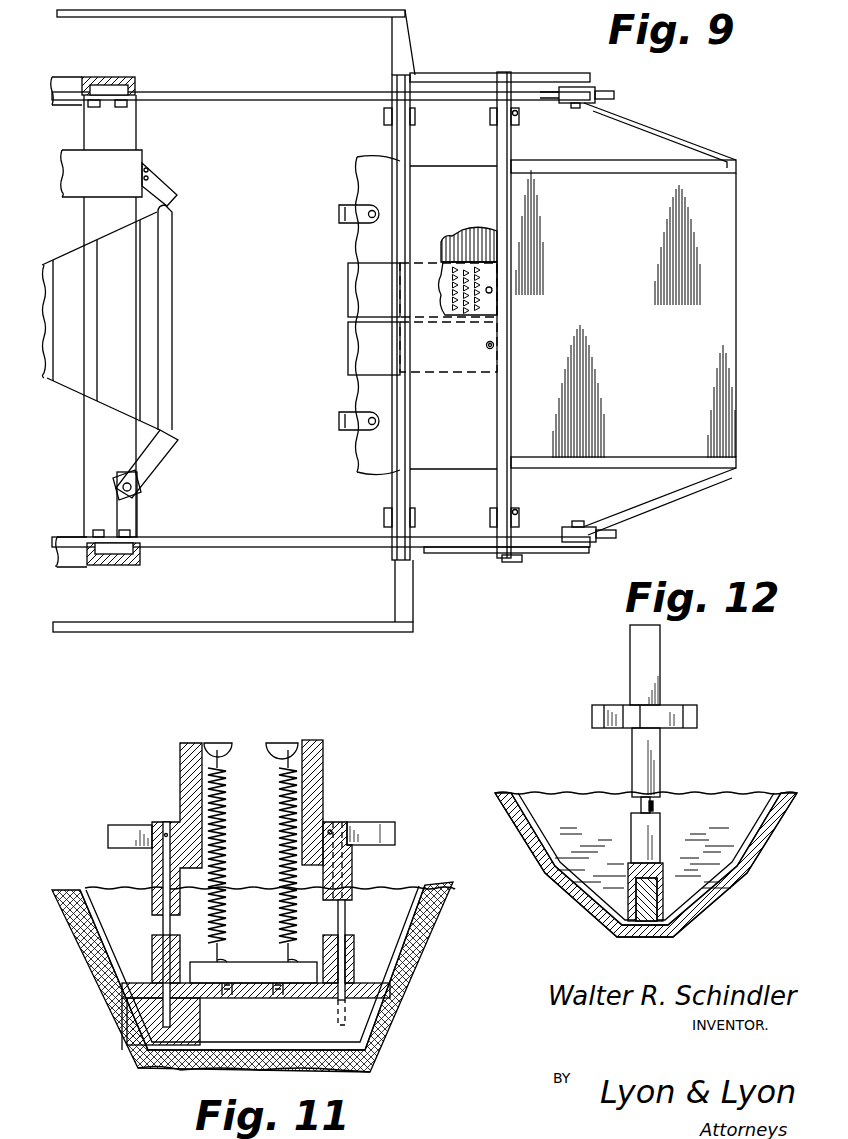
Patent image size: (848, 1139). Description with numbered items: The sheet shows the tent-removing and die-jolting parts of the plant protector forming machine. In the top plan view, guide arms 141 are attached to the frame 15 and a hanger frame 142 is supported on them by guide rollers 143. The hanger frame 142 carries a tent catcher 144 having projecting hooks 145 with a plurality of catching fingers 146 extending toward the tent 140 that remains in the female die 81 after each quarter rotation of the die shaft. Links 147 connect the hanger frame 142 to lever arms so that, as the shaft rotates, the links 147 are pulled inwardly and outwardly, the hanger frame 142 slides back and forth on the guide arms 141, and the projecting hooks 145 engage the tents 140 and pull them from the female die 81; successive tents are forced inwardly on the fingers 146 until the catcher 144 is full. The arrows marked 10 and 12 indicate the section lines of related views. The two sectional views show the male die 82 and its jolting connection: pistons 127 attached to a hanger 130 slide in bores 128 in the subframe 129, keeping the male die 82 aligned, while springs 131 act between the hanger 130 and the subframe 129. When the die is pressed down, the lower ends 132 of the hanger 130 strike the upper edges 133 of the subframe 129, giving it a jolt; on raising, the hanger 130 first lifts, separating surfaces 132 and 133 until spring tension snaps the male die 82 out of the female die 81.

In FIG. 9, the pressure rollers 10 is at (205, 321).
In FIG. 11, the sprocket 12 is at (143, 883).
In FIG. 9, the frame 15 is at (128, 57).
In FIG. 9, the female die 81 is at (130, 383).
In FIG. 11, the female die 81 is at (403, 983).
In FIG. 12, the female die 81 is at (726, 881).
In FIG. 11, the male die 82 is at (430, 904).
In FIG. 12, the male die 82 is at (757, 797).
In FIG. 11, the pistons 127 is at (161, 933).
In FIG. 12, the pistons 127 is at (639, 806).
In FIG. 11, the bores 128 is at (350, 962).
In FIG. 11, the subframe 129 is at (298, 992).
In FIG. 12, the subframe 129 is at (664, 871).
In FIG. 11, the hanger 130 is at (312, 799).
In FIG. 12, the hanger 130 is at (648, 677).
In FIG. 11, the springs 131 is at (276, 802).
In FIG. 11, the lower ends of the hanger 132 is at (356, 900).
In FIG. 12, the lower ends of the hanger 132 is at (646, 793).
In FIG. 11, the upper edges of the subframe 133 is at (330, 940).
In FIG. 12, the upper edges of the subframe 133 is at (655, 808).
In FIG. 9, the tent 140 is at (163, 233).
In FIG. 9, the guide arms 141 is at (293, 97).
In FIG. 9, the hanger frame 142 is at (455, 84).
In FIG. 9, the guide rollers 143 is at (597, 84).
In FIG. 9, the tent catcher 144 is at (452, 177).
In FIG. 9, the projecting hooks 145 is at (360, 284).
In FIG. 9, the catching fingers 146 is at (468, 281).
In FIG. 9, the links 147 is at (268, 14).